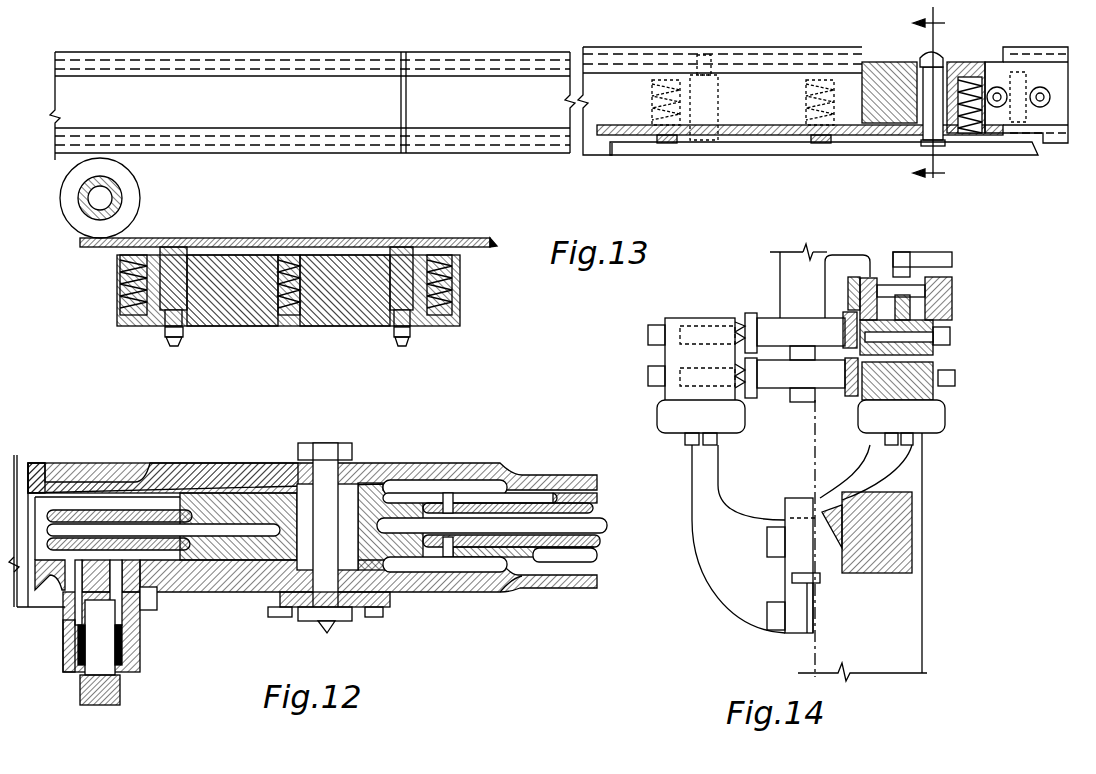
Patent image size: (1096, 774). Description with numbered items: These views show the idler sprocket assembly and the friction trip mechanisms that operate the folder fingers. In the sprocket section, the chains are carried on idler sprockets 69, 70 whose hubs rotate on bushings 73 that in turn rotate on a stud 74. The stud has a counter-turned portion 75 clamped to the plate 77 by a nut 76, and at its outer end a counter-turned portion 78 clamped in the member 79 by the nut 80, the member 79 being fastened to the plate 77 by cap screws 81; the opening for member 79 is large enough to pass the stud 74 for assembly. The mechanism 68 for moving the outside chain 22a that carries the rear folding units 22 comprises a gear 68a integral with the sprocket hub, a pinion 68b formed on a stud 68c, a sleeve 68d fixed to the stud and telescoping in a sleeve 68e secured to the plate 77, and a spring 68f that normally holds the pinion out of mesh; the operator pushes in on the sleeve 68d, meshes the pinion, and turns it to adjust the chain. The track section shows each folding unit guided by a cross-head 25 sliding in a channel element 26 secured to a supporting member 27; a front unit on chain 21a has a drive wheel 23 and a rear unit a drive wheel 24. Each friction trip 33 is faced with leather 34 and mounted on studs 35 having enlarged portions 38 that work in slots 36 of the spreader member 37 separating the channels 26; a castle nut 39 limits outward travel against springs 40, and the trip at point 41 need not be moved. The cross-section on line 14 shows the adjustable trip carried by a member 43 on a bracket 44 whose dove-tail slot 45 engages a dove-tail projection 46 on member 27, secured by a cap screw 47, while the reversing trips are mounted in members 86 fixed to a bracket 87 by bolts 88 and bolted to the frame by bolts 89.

In FIG. 13, the section line 14- 14 is at (939, 101).
In FIG. 14, the endless chain 21a is at (905, 300).
In FIG. 13, the rear folding unit 22 is at (85, 195).
In FIG. 14, the rear folding unit 22 is at (805, 270).
In FIG. 14, the endless chain 22a is at (888, 300).
In FIG. 13, the drive wheel 23 is at (120, 186).
In FIG. 14, the drive wheel 23 is at (801, 374).
In FIG. 14, the drive wheel 24 is at (801, 332).
In FIG. 14, the cross-head or slide member 25 is at (945, 290).
In FIG. 13, the channel element 26 is at (493, 66).
In FIG. 14, the channel element 26 is at (855, 300).
In FIG. 14, the supporting member 27 is at (862, 568).
In FIG. 13, the friction trip 33 is at (845, 150).
In FIG. 14, the friction trip 33 is at (752, 402).
In FIG. 13, the leather facing 34 is at (795, 157).
In FIG. 14, the leather facing 34 is at (765, 328).
In FIG. 13, the stud 35 is at (717, 92).
In FIG. 13, the slot 36 is at (920, 62).
In FIG. 13, the spreader member 37 is at (850, 73).
In FIG. 14, the spreader member 37 is at (936, 340).
In FIG. 13, the enlarged portion 38 is at (718, 115).
In FIG. 13, the castle nut 39 is at (928, 52).
In FIG. 14, the castle nut 39 is at (948, 327).
In FIG. 13, the spring 40 is at (676, 138).
In FIG. 14, the spring 40 is at (740, 320).
In FIG. 13, the point 41 is at (757, 134).
In FIG. 14, the member 43 is at (930, 376).
In FIG. 14, the bracket 44 is at (855, 457).
In FIG. 14, the dove-tail slot 45 is at (823, 530).
In FIG. 14, the dove-tail projection 46 is at (842, 547).
In FIG. 14, the cap screw 47 is at (812, 592).
In FIG. 12, the chain-moving mechanism 68 is at (75, 676).
In FIG. 12, the gear 68a is at (522, 572).
In FIG. 12, the pinion 68b is at (66, 612).
In FIG. 12, the stud 68c is at (108, 650).
In FIG. 12, the sleeve 68d is at (120, 690).
In FIG. 12, the sleeve 68e is at (140, 603).
In FIG. 12, the spring 68f is at (68, 650).
In FIG. 12, the idler sprocket 69 is at (612, 542).
In FIG. 12, the idler sprocket 70 is at (612, 500).
In FIG. 12, the bushing 73 is at (270, 592).
In FIG. 12, the stud 74 is at (327, 527).
In FIG. 12, the counter-turned portion 75 is at (328, 470).
In FIG. 12, the nut 76 is at (330, 450).
In FIG. 12, the plate 77 is at (440, 468).
In FIG. 12, the counter-turned portion 78 is at (330, 590).
In FIG. 12, the member 79 is at (390, 600).
In FIG. 12, the nut 80 is at (338, 621).
In FIG. 12, the cap screw 81 is at (380, 618).
In FIG. 13, the member 86 is at (338, 312).
In FIG. 14, the member 86 is at (697, 392).
In FIG. 14, the bracket 87 is at (768, 592).
In FIG. 14, the bolt 88 is at (705, 442).
In FIG. 14, the bolt 89 is at (768, 540).